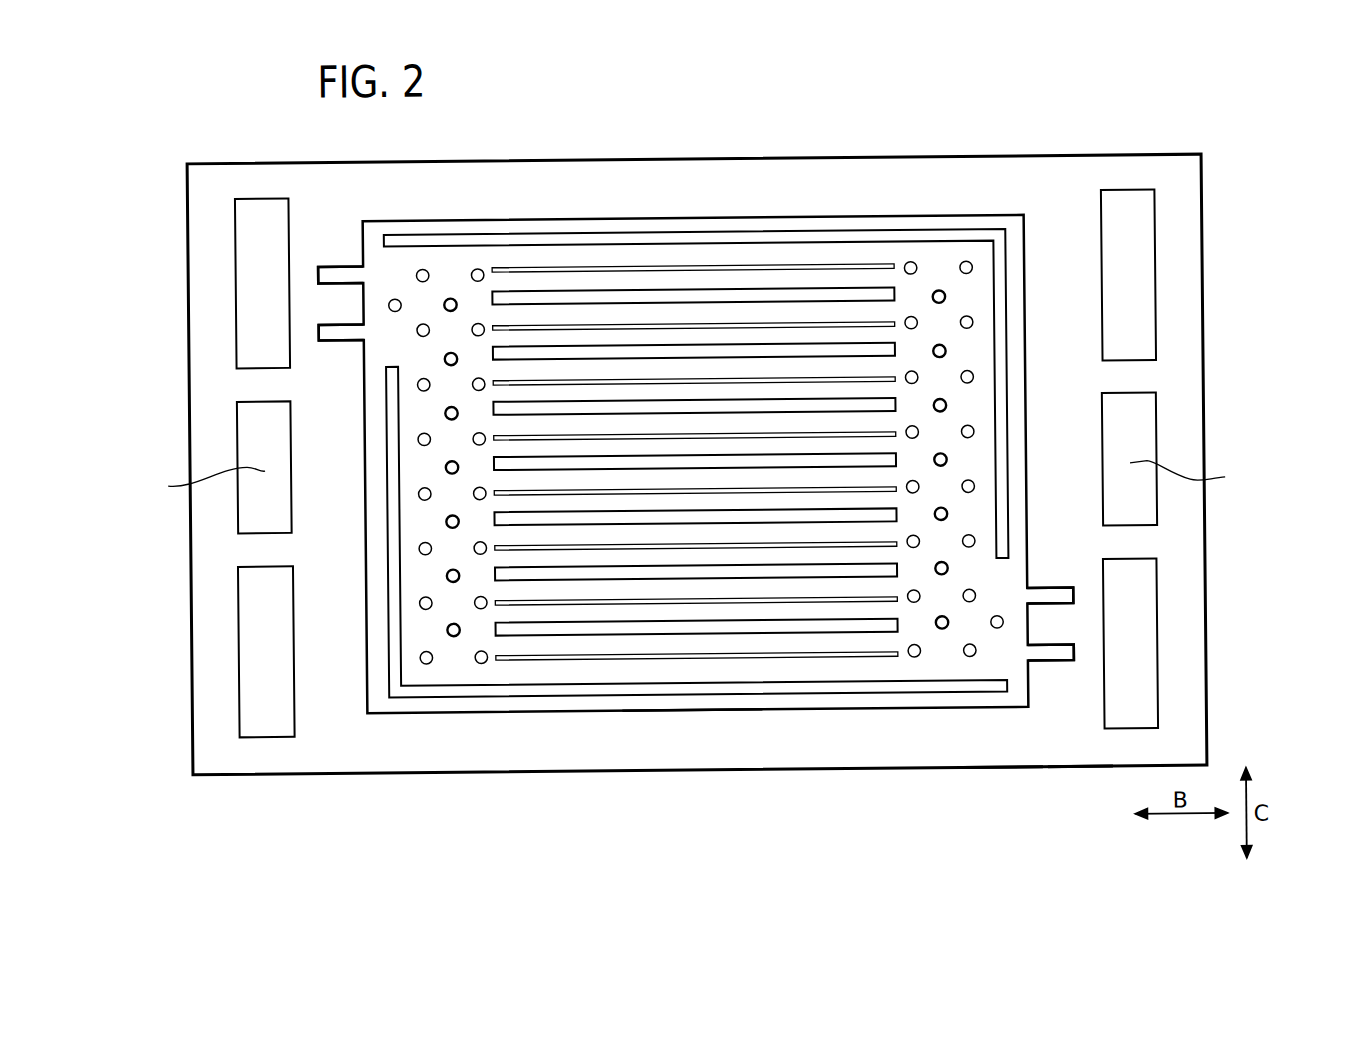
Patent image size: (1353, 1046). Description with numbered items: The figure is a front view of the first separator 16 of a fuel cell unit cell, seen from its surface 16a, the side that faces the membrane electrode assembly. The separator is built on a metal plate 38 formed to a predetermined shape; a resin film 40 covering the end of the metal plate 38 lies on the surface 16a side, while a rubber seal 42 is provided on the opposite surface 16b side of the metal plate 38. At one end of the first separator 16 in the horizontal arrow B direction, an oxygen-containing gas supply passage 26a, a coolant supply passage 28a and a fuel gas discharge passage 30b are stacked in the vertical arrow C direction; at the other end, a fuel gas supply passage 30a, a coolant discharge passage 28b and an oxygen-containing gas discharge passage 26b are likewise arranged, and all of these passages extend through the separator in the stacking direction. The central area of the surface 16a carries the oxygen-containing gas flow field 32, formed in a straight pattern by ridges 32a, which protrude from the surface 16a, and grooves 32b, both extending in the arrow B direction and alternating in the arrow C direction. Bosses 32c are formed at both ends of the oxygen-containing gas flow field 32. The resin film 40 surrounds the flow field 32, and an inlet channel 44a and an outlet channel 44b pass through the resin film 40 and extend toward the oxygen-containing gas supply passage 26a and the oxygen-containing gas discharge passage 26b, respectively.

The first separator 16 is at (967, 100).
The surface 16a is at (1068, 752).
The surface 16b is at (1004, 752).
The oxygen-containing gas supply passage 26a is at (262, 283).
The oxygen-containing gas discharge passage 26b is at (1130, 644).
The coolant supply passage 28a is at (170, 468).
The coolant discharge passage 28b is at (1222, 458).
The fuel gas supply passage 30a is at (1128, 275).
The fuel gas discharge passage 30b is at (266, 651).
The oxygen-containing gas flow field 32 is at (696, 420).
The ridges 32a is at (581, 294).
The grooves 32b is at (704, 324).
The bosses 32c is at (445, 409).
The metal plate 38 is at (840, 677).
The resin film 40 is at (598, 735).
The rubber seal 42 is at (683, 735).
The inlet channel 44a is at (340, 262).
The outlet channel 44b is at (1054, 665).